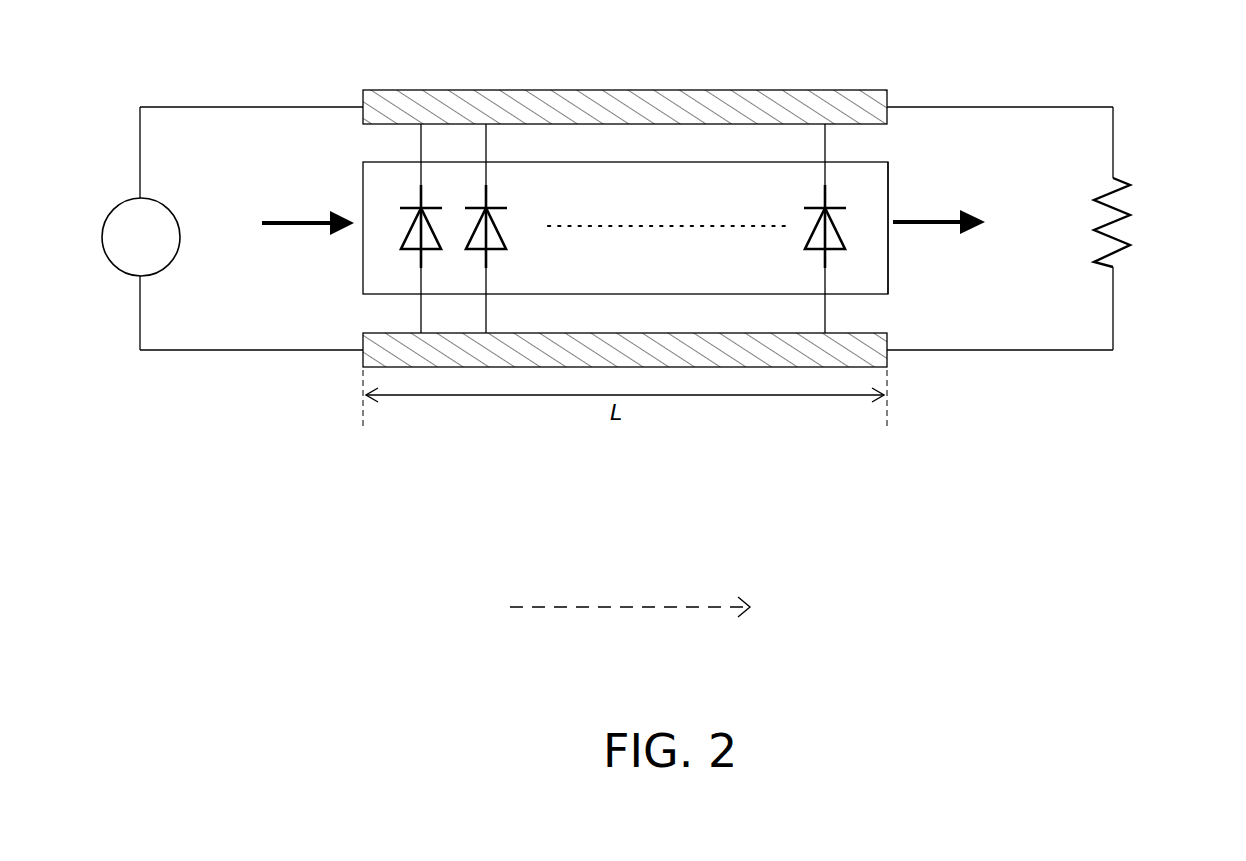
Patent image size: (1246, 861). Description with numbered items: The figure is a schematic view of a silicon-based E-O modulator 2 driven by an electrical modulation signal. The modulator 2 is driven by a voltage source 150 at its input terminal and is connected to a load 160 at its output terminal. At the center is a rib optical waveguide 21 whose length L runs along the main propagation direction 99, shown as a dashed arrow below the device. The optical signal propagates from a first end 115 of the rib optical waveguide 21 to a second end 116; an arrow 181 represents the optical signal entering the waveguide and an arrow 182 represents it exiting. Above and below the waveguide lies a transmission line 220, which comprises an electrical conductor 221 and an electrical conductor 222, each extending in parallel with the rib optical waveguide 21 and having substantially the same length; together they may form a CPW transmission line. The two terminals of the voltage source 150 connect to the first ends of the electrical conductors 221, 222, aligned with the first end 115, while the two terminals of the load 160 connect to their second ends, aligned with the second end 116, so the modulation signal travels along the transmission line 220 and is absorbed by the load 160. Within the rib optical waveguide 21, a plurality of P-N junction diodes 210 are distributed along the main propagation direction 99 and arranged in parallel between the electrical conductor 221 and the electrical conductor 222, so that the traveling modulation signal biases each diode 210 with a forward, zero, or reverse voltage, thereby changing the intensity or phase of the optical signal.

The silicon-based E-O modulator 2 is at (887, 53).
The rib optical waveguide 21 is at (669, 249).
The main propagation direction 99 is at (528, 608).
The first end of the rib optical waveguide 115 is at (363, 180).
The second end of the rib optical waveguide 116 is at (888, 272).
The voltage source 150 is at (141, 237).
The load 160 is at (1139, 190).
The arrow representing the entering optical signal 181 is at (302, 226).
The arrow representing the exiting optical signal 182 is at (923, 225).
The P-N junction diodes 210 is at (857, 228).
The transmission line 220 is at (524, 281).
The electrical conductor 221 is at (363, 90).
The electrical conductor 222 is at (363, 333).